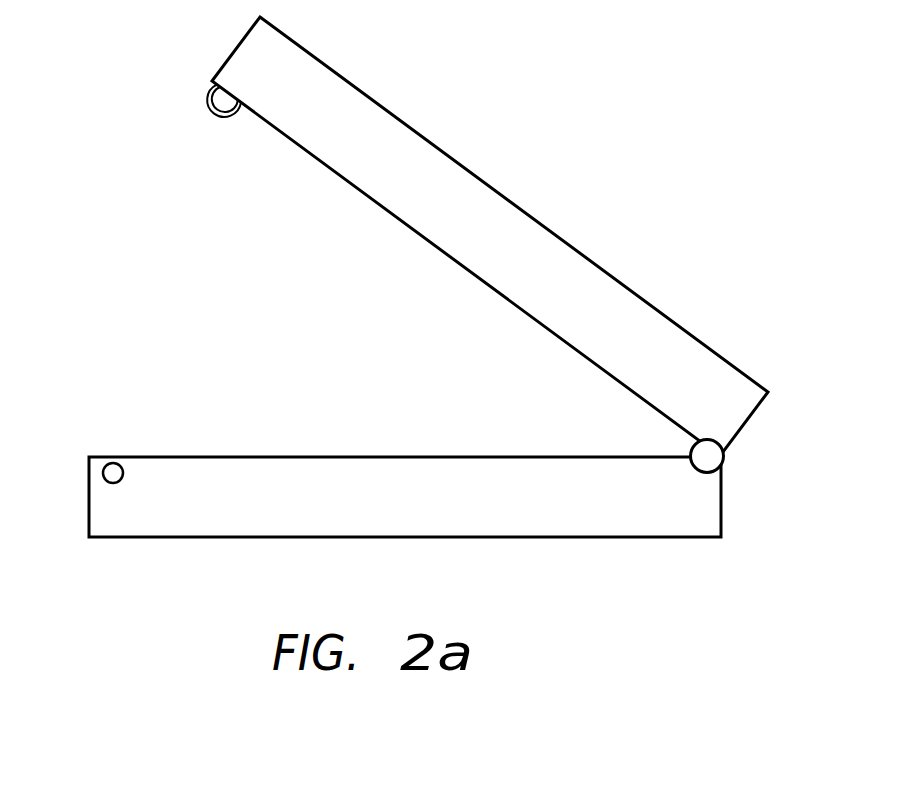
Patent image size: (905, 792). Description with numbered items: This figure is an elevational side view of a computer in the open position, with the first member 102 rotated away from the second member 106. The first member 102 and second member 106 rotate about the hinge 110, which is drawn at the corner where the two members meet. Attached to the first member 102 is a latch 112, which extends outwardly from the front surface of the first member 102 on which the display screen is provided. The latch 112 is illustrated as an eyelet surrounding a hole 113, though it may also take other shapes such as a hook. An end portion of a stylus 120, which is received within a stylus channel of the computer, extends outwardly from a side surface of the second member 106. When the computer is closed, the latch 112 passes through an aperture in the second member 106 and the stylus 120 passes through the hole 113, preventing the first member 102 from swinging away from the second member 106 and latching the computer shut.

The first member 102 is at (417, 157).
The second member 106 is at (380, 515).
The hinge 110 is at (707, 456).
The latch 112 is at (208, 108).
The hole 113 is at (223, 108).
The stylus 120 is at (113, 473).